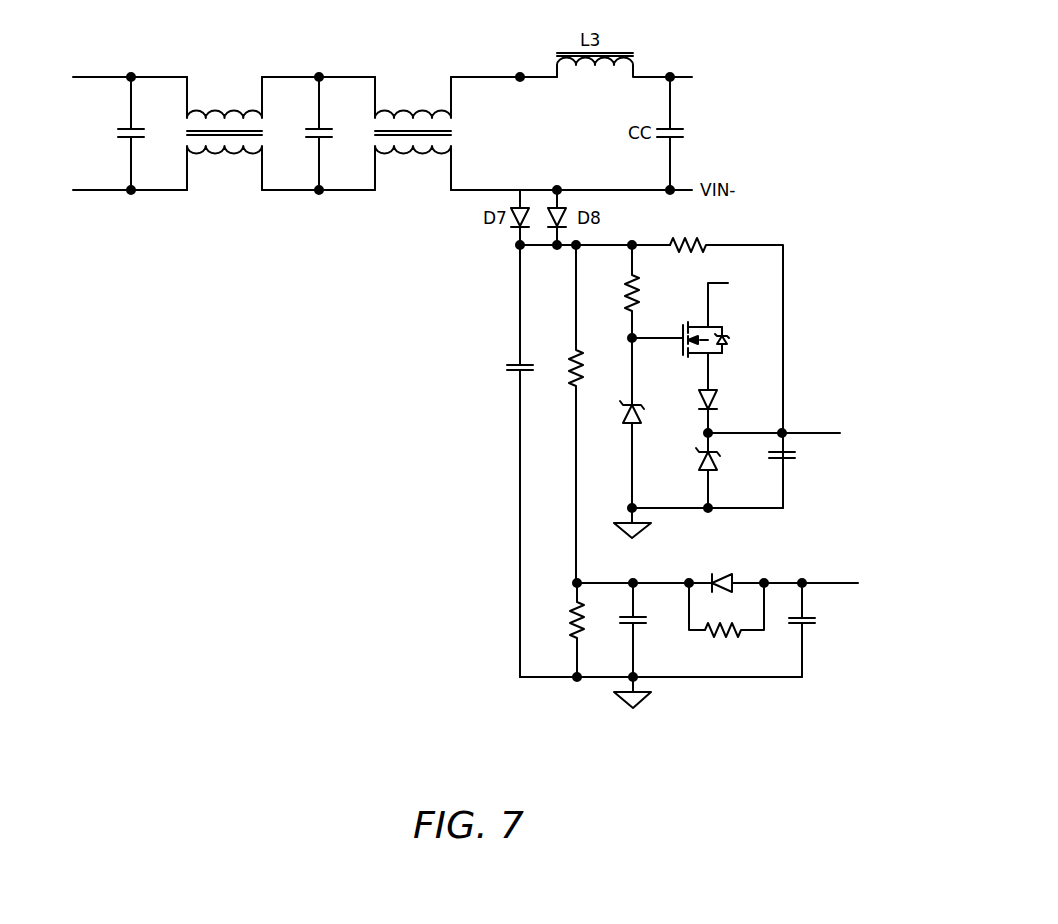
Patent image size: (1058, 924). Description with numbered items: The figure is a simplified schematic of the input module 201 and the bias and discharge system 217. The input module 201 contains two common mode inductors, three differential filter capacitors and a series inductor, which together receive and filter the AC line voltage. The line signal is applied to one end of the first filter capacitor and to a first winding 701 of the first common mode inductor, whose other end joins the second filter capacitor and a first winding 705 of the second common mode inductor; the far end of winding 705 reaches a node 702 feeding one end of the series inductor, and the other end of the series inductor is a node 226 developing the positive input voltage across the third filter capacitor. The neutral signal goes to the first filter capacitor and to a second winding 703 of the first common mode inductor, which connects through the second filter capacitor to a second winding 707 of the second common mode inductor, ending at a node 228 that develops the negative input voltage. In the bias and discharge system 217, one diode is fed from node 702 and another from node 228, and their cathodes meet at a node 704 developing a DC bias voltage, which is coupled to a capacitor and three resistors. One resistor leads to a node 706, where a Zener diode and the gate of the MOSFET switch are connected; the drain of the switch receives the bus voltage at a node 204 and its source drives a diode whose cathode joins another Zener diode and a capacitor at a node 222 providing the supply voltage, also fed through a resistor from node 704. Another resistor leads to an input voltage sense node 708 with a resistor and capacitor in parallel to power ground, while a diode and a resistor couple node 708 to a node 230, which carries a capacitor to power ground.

The input module 201 is at (200, 218).
The first winding of the inductor L1 701 is at (187, 118).
The second winding of the inductor L1 703 is at (187, 148).
The first winding of the inductor L2 705 is at (375, 118).
The second winding of the inductor L2 707 is at (375, 148).
The node 702 is at (520, 77).
The node 226 is at (670, 77).
The node 228 is at (557, 190).
The bias and discharge system 217 is at (793, 208).
The node 704 is at (520, 245).
The node 706 is at (632, 338).
The node 204 is at (728, 283).
The node 222 is at (782, 433).
The input voltage sense node 708 is at (577, 583).
The node 230 is at (802, 583).